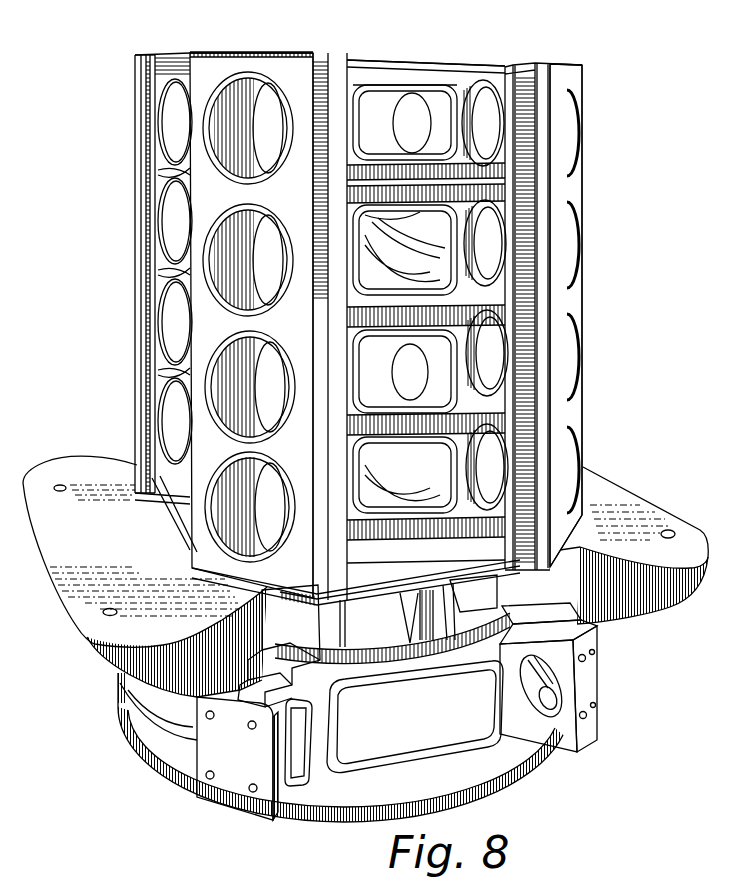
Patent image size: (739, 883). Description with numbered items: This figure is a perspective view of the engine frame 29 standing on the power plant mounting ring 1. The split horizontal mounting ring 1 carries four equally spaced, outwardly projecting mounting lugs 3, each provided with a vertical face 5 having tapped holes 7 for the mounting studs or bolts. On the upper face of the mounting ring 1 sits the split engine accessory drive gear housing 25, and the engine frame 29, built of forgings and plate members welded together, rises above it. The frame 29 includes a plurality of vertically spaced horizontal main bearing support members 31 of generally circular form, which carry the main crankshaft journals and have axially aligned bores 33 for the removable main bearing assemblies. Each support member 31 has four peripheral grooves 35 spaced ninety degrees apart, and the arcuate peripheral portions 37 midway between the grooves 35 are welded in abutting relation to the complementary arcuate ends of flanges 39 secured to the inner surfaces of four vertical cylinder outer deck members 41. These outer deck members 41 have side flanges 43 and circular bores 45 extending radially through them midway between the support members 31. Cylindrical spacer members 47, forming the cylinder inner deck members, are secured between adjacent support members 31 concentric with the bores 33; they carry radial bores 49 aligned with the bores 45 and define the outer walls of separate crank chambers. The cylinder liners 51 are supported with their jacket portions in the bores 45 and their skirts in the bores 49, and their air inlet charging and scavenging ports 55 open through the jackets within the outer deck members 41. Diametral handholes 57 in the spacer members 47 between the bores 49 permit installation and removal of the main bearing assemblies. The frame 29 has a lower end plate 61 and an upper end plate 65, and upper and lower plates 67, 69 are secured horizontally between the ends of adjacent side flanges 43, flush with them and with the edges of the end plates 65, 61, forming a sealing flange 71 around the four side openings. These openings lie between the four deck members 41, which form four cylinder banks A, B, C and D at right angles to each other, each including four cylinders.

The split horizontal mounting ring 1 is at (350, 802).
The mounting lugs 3 is at (317, 697).
The vertical faces 5 is at (233, 790).
The tapped holes 7 is at (214, 716).
The split engine accessory drive gear housing 25 is at (117, 653).
The engine frame 29 is at (595, 436).
The main bearing support members 31 is at (230, 365).
The bores 33 is at (410, 270).
The peripheral grooves 35 is at (357, 337).
The arcuate peripheral portions 37 is at (190, 167).
The flanges 39 is at (163, 177).
The vertical cylinder outer deck members 41 is at (290, 70).
The side flanges 43 is at (152, 218).
The circular bores 45 is at (237, 217).
The cylindrical spacer members 47 is at (248, 77).
The radial bores 49 is at (280, 170).
The cylinder liners 51 is at (447, 257).
The air inlet charging and scavenging ports 55 is at (400, 200).
The diametral handholes 57 is at (452, 100).
The lower end plate 61 is at (270, 593).
The upper end plate 65 is at (215, 52).
The upper plates 67 is at (168, 73).
The lower plates 69 is at (178, 530).
The sealing flange 71 is at (420, 62).
The cylinder bank A is at (577, 56).
The cylinder bank B is at (237, 50).
The cylinder bank C is at (133, 77).
The cylinder bank D is at (383, 100).